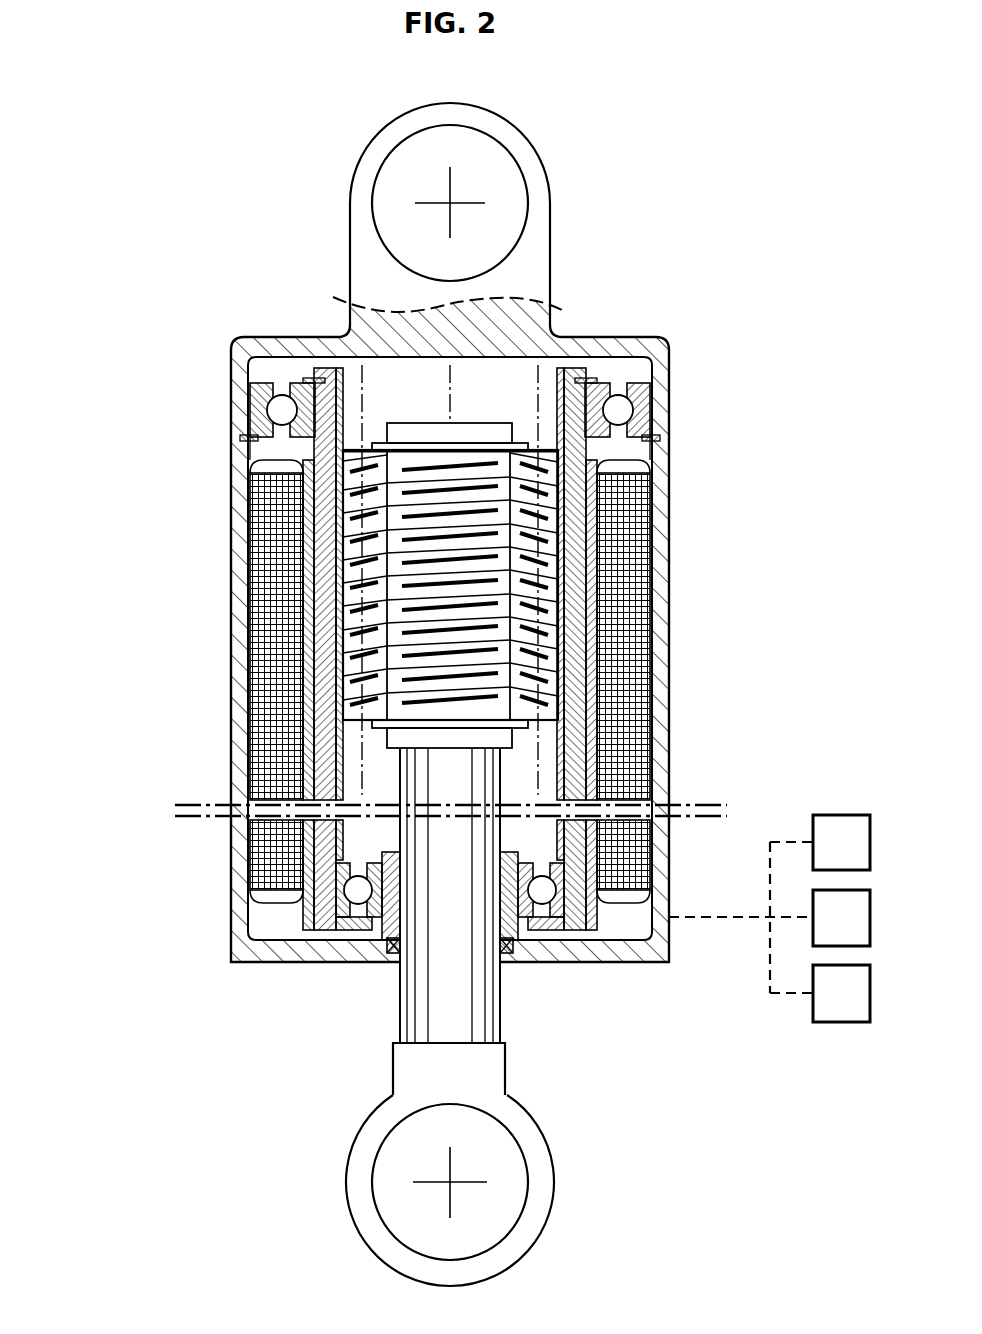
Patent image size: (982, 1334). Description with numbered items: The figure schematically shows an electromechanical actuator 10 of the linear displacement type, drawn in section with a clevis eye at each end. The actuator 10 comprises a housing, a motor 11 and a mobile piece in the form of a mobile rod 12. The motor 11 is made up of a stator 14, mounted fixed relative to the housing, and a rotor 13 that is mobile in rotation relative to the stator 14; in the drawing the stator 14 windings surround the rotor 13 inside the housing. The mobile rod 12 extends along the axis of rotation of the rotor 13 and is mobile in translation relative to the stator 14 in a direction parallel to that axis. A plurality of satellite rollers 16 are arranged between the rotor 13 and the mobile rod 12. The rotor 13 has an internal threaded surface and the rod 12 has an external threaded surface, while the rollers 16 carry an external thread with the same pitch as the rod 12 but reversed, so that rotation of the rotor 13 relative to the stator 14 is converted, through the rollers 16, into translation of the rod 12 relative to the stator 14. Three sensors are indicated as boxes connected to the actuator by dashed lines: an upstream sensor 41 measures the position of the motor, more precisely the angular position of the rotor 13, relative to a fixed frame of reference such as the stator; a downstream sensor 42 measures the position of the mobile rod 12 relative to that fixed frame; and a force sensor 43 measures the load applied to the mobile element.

The actuator 10 is at (116, 613).
The motor 11 is at (280, 737).
The mobile rod 12 is at (427, 990).
The rotor 13 is at (318, 912).
The stator 14 is at (290, 952).
The satellite rollers 16 is at (360, 568).
The upstream sensor 41 is at (828, 855).
The downstream sensor 42 is at (828, 930).
The force sensor 43 is at (828, 1007).